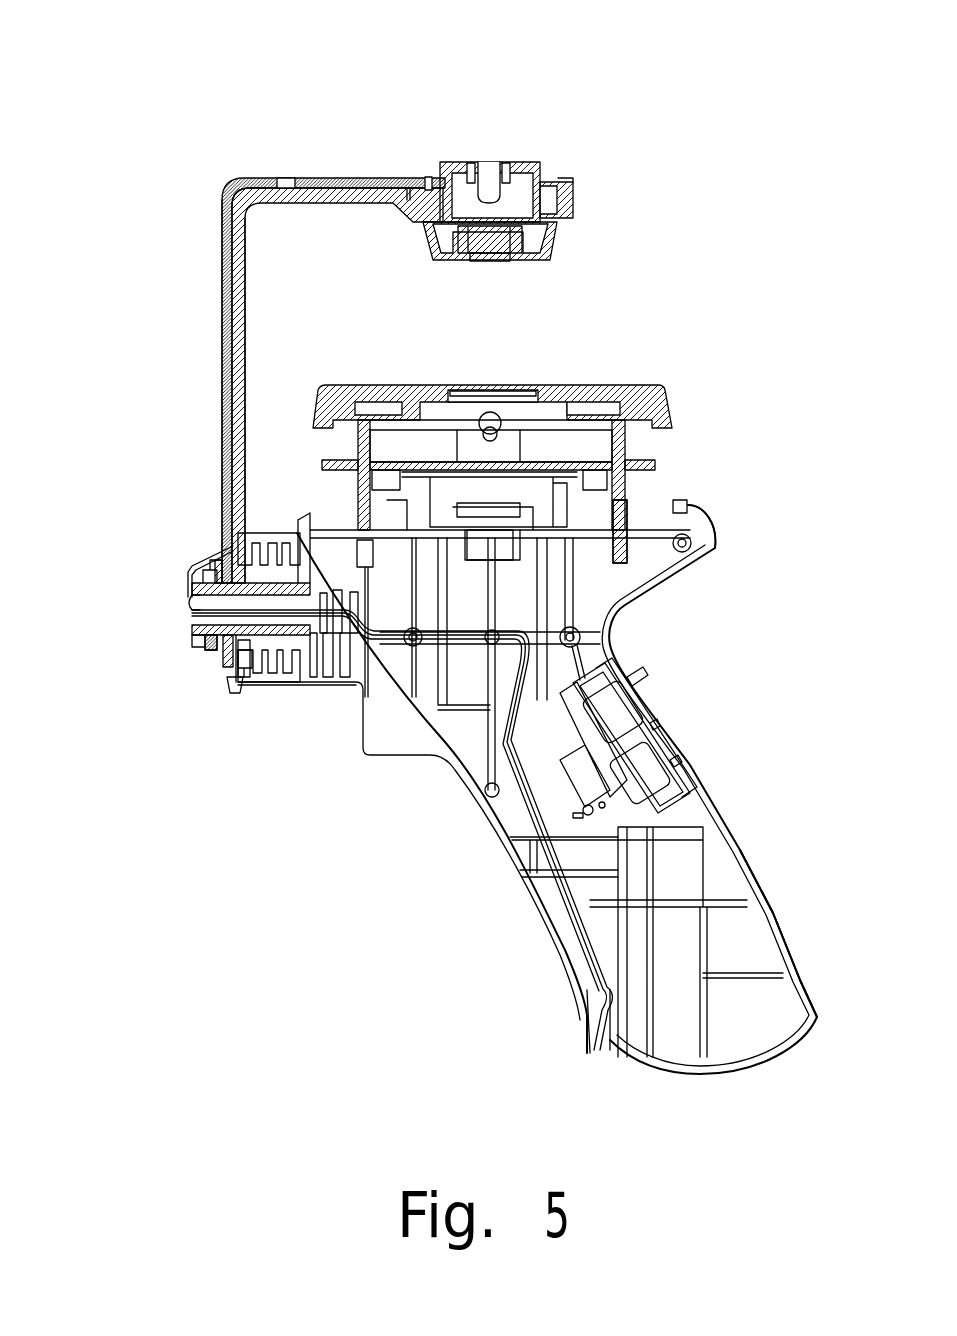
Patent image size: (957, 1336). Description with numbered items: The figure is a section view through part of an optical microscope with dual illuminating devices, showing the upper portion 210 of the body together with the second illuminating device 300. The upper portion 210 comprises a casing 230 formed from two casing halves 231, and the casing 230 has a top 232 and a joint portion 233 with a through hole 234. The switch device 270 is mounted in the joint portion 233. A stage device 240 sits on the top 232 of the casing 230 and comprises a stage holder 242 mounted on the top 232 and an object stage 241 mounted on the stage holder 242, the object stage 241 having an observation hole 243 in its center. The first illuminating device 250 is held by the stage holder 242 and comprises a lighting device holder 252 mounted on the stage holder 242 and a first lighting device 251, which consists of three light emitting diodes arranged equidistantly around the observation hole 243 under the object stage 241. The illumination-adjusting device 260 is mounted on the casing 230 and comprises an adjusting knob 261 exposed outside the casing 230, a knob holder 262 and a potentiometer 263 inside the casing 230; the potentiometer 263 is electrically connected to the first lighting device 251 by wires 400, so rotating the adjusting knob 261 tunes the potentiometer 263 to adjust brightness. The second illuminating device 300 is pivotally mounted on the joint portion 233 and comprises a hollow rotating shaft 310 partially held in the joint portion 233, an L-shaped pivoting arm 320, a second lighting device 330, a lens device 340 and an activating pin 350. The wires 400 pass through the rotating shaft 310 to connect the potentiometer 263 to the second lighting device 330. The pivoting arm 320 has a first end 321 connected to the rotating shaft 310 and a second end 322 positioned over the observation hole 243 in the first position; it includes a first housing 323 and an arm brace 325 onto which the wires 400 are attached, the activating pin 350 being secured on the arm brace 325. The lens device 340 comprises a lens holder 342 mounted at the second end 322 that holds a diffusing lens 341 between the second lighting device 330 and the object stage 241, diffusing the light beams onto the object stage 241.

The second illuminating device 300 is at (178, 118).
The wires 400 is at (300, 176).
The pivoting arm 320 is at (190, 224).
The first end 321 is at (222, 500).
The first housing 323 is at (245, 258).
The arm brace 325 is at (222, 270).
The second lighting device 330 is at (492, 170).
The second end 322 is at (546, 200).
The lens device 340 is at (590, 238).
The lens 341 is at (500, 262).
The lens holder 342 is at (552, 250).
The upper portion 210 is at (742, 328).
The stage device 240 is at (575, 367).
The object stage 241 is at (640, 388).
The stage holder 242 is at (627, 447).
The observation hole 243 is at (472, 390).
The first illuminating device 250 is at (577, 493).
The first lighting device 251 is at (493, 412).
The lighting device holder 252 is at (388, 442).
The top 232 is at (688, 505).
The casing 230 is at (668, 935).
The casing halves 231 is at (762, 905).
The joint portion 233 is at (278, 675).
The through hole 234 is at (245, 700).
The switch device 270 is at (206, 660).
The rotating shaft 310 is at (192, 628).
The activating pin 350 is at (206, 550).
The illumination-adjusting device 260 is at (655, 675).
The adjusting knob 261 is at (648, 728).
The knob holder 262 is at (642, 778).
The potentiometer 263 is at (523, 793).